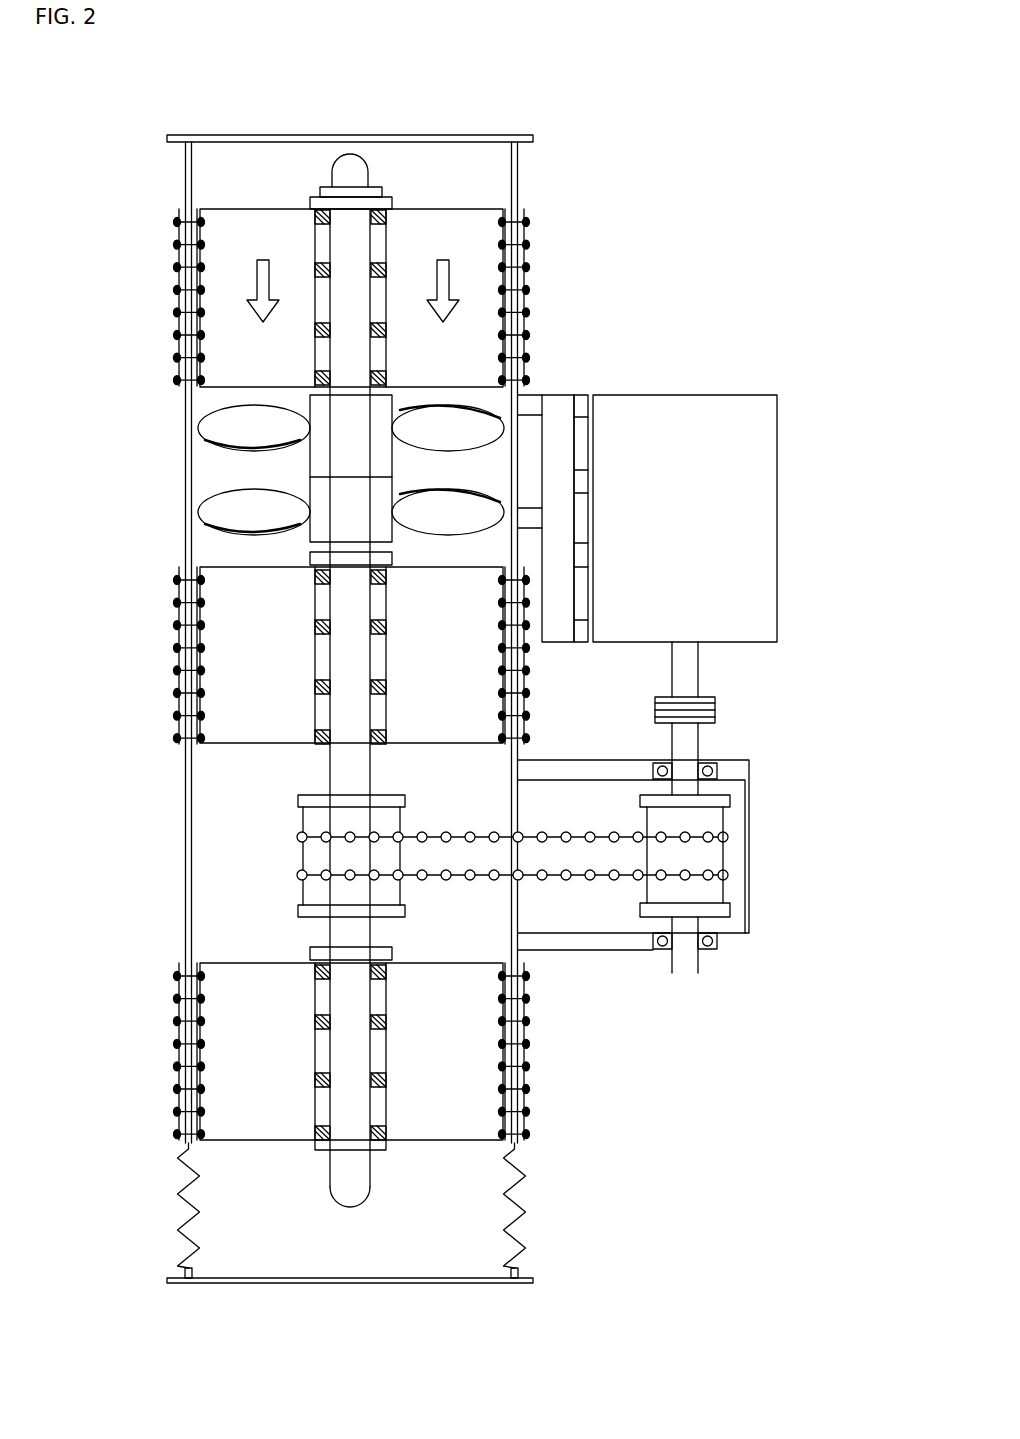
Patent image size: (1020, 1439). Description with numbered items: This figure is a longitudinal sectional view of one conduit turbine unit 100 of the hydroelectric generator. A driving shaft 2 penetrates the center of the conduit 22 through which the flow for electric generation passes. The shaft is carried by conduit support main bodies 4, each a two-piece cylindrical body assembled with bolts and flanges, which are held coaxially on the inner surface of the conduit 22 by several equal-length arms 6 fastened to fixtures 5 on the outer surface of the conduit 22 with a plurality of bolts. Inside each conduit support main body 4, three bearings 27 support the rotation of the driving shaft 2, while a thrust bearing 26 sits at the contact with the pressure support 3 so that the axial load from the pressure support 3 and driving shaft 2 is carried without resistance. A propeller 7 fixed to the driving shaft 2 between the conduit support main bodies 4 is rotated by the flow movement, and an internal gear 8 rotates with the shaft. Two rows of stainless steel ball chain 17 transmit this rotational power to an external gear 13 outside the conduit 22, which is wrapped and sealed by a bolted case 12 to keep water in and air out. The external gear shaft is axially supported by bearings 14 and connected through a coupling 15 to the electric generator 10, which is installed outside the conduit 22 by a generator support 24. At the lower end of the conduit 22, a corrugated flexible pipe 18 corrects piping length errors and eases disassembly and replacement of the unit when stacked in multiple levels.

The conduit turbine unit 100 is at (118, 176).
The driving shaft 2 is at (357, 1193).
The pressure support 3 is at (317, 200).
The conduit support main body 4 is at (313, 243).
The fixture 5 is at (177, 280).
The arm 6 is at (465, 220).
The propeller 7 is at (213, 430).
The internal gear 8 is at (310, 813).
The electric generator 10 is at (728, 412).
The case 12 is at (750, 907).
The external gear 13 is at (710, 817).
The bearings 14 is at (717, 942).
The coupling 15 is at (717, 700).
The ball chain 17 is at (447, 835).
The flexible pipe 18 is at (185, 1207).
The conduit 22 is at (518, 177).
The generator support 24 is at (558, 403).
The thrust bearing 26 is at (385, 210).
The bearings 27 is at (387, 270).